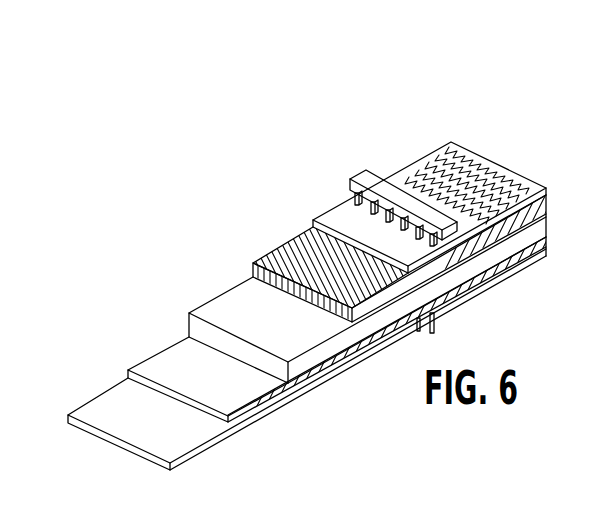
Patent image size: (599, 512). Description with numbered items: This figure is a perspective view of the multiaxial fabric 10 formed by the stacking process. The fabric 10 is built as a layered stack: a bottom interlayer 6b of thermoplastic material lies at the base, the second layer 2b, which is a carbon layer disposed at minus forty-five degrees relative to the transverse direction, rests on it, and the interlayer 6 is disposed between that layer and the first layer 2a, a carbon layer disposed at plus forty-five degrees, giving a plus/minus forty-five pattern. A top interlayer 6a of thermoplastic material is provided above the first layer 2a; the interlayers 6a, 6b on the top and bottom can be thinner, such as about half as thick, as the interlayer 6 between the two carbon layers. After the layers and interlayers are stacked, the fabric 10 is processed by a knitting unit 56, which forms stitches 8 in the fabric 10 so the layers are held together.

The multiaxial fabric 10 is at (478, 80).
The bottom interlayer 6b is at (115, 407).
The second layer 2b is at (178, 358).
The interlayer 6 is at (221, 300).
The first layer 2a is at (293, 255).
The top interlayer 6a is at (341, 221).
The knitting unit 56 is at (357, 170).
The stitches 8 is at (500, 167).